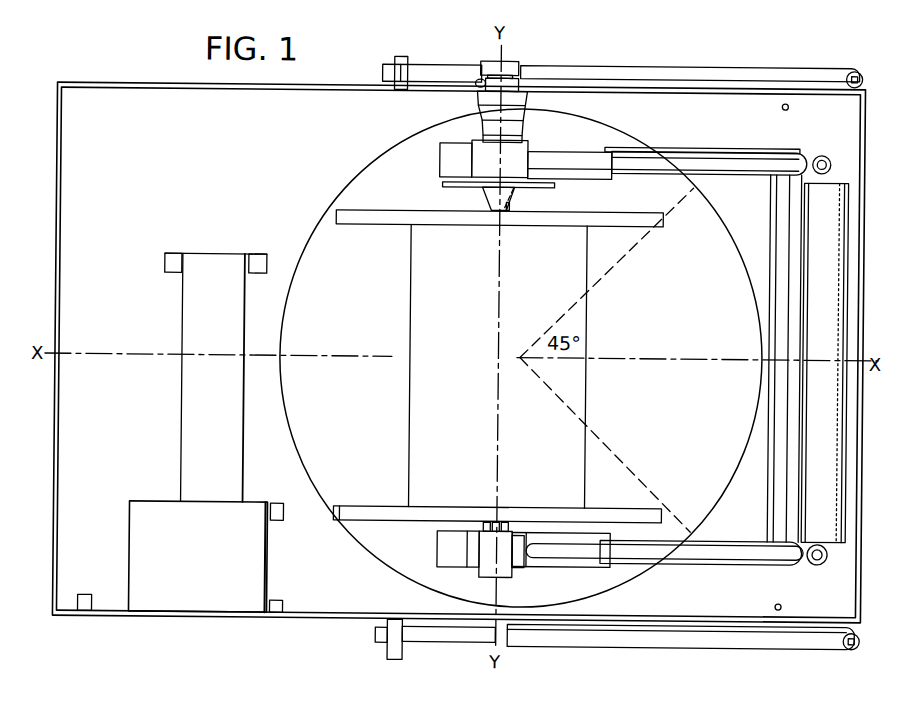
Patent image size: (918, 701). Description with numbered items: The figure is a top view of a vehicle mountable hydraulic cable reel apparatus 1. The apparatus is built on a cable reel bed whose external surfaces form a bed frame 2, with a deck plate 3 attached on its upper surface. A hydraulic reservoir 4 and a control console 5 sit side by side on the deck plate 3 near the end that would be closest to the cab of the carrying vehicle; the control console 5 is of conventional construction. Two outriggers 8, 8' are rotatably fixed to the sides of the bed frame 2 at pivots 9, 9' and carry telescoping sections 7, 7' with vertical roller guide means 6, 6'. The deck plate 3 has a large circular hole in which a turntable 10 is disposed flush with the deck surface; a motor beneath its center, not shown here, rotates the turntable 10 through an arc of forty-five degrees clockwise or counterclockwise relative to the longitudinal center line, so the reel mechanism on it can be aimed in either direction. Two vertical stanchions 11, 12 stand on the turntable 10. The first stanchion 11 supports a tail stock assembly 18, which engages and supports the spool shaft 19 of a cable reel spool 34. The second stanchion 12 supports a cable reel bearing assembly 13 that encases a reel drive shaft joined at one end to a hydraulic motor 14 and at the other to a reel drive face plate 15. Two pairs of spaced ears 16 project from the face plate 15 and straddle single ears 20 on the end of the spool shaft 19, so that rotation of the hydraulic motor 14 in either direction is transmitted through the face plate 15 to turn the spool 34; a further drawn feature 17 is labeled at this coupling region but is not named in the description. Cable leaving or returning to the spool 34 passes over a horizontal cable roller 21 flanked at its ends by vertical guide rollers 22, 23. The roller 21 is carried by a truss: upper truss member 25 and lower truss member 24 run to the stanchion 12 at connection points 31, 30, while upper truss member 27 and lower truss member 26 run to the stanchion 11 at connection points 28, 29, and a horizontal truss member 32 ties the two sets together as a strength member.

The vehicle mountable hydraulic cable reel apparatus 1 is at (92, 625).
The bed frame 2 is at (141, 618).
The deck plate 3 is at (322, 595).
The hydraulic reservoir 4 is at (182, 440).
The control console 5 is at (248, 530).
The vertical roller guide means 6 is at (383, 645).
The vertical roller guide means 6' is at (400, 55).
The telescoping section 7 is at (448, 649).
The telescoping section 7' is at (432, 57).
The outrigger 8 is at (681, 624).
The outrigger 8' is at (690, 60).
The outrigger pivot 9 is at (844, 622).
The outrigger pivot 9' is at (851, 65).
The turntable 10 is at (378, 541).
The vertical stanchion 11 is at (452, 555).
The vertical stanchion 12 is at (463, 142).
The cable reel bearing assembly 13 is at (516, 160).
The hydraulic motor 14 is at (507, 70).
The reel drive face plate 15 is at (551, 187).
The spaced ears 16 is at (481, 196).
The cone bore 17 is at (489, 210).
The tail stock assembly 18 is at (498, 578).
The spool shaft 19 is at (509, 562).
The single ears 20 is at (508, 202).
The horizontal cable roller 21 is at (835, 196).
The vertical guide roller 22 is at (833, 139).
The vertical guide roller 23 is at (819, 546).
The lower truss member 24 is at (755, 150).
The upper truss member 25 is at (708, 161).
The lower truss member 26 is at (765, 564).
The upper truss member 27 is at (704, 551).
The connection point 28 is at (529, 557).
The connection point 29 is at (602, 568).
The connection point 30 is at (611, 147).
The connection point 31 is at (526, 151).
The horizontal truss member 32 is at (795, 194).
The cable reel spool 34 is at (428, 401).